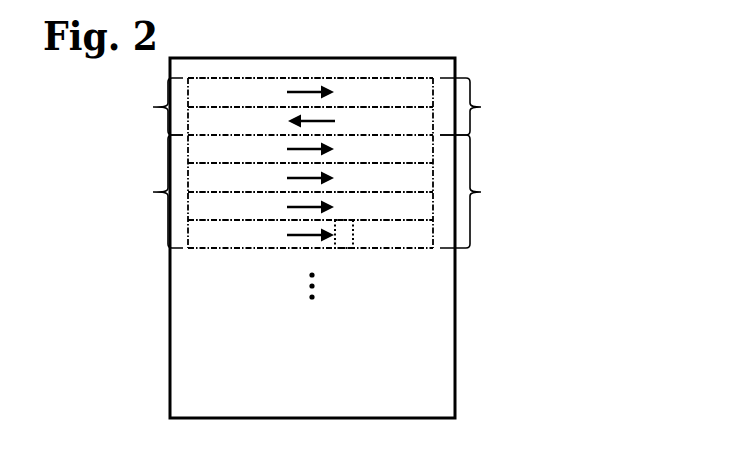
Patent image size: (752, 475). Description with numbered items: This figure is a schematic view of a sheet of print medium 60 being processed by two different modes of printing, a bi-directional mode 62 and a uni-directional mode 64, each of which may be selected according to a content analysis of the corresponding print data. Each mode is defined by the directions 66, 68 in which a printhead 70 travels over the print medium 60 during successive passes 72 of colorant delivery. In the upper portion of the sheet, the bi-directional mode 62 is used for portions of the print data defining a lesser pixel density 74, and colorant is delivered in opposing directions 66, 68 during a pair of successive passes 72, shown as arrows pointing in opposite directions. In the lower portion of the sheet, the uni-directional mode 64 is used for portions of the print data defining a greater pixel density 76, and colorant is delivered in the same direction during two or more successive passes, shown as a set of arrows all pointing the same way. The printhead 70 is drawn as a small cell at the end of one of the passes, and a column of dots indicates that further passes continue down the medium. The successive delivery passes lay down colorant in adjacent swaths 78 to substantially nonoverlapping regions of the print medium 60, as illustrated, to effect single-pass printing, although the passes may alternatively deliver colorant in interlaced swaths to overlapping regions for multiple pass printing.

The print medium 60 is at (221, 53).
The bi-directional mode 62 is at (150, 106).
The uni-directional mode 64 is at (150, 191).
The direction 66 is at (305, 90).
The direction 68 is at (327, 120).
The printhead 70 is at (339, 248).
The passes 72 is at (406, 125).
The lesser pixel density 74 is at (638, 65).
The greater pixel density 76 is at (638, 202).
The adjacent swaths 78 is at (433, 150).